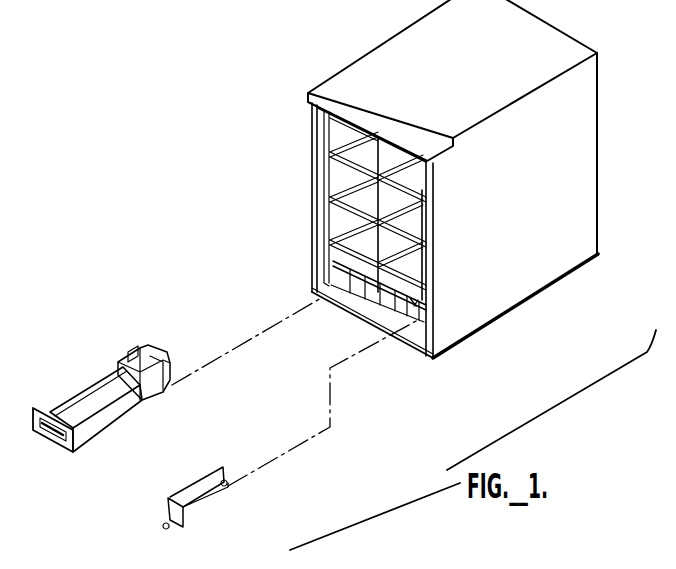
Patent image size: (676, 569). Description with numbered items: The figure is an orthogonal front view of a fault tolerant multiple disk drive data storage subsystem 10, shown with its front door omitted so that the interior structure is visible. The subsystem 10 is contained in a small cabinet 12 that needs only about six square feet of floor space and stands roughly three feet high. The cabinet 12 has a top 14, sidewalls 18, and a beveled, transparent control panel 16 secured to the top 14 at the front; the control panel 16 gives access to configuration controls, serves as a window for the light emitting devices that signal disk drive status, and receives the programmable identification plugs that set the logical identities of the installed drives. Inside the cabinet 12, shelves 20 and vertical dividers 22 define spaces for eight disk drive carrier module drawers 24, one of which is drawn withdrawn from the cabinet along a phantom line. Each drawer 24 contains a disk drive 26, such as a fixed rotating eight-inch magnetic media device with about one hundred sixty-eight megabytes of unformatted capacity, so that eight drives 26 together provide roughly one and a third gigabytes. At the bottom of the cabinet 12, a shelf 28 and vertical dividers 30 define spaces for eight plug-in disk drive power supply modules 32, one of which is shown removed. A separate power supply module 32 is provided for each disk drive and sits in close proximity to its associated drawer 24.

The fault tolerant multiple disk drive data storage subsystem 10 is at (548, 342).
The cabinet 12 is at (537, 297).
The top 14 is at (400, 203).
The control panel 16 is at (335, 93).
The sidewalls 18 is at (571, 178).
The shelves 20 is at (355, 127).
The vertical dividers 22 is at (390, 208).
The disk drive carrier module drawer 24 is at (143, 398).
The disk drive 26 is at (93, 404).
The shelf 28 is at (416, 300).
The vertical dividers 30 is at (413, 310).
The plug-in disk drive power supply module 32 is at (195, 493).